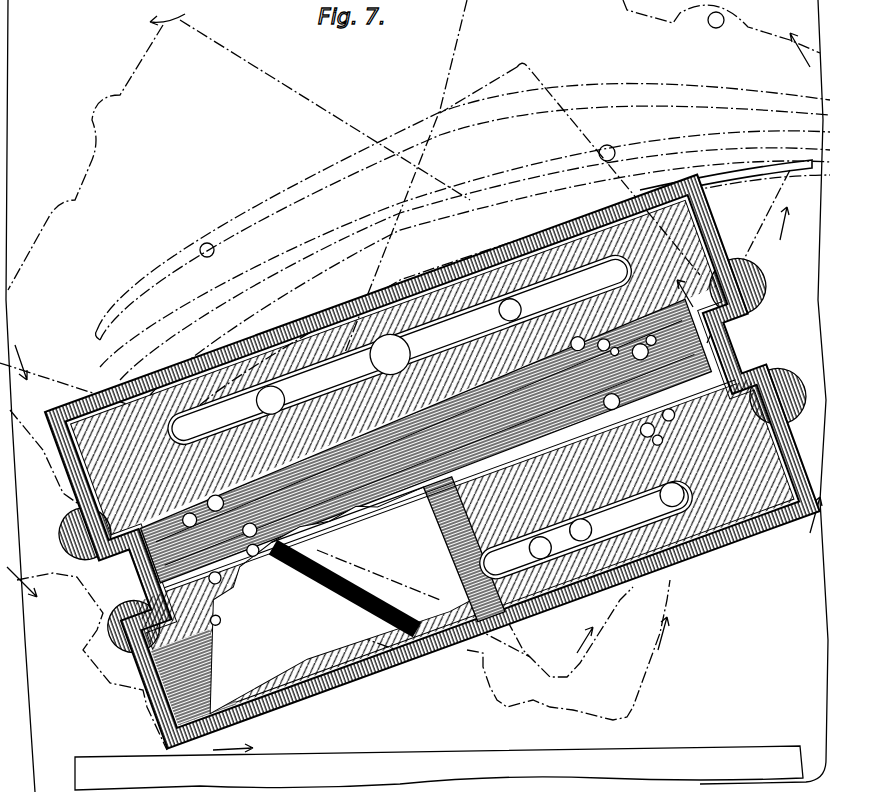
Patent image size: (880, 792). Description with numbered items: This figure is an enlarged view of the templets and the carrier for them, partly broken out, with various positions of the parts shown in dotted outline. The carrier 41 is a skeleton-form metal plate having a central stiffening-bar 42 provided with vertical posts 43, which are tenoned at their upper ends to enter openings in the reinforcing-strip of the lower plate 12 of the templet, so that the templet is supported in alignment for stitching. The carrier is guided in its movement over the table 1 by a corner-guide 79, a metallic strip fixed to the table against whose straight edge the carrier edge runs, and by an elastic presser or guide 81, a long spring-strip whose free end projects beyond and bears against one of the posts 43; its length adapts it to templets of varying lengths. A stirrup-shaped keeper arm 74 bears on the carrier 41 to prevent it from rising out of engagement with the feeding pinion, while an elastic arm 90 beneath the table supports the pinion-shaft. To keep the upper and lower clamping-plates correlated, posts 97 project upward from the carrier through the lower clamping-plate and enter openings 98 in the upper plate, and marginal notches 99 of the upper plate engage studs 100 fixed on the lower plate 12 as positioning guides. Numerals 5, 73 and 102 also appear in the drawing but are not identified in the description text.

The table 1 is at (417, 396).
The door 5 is at (91, 153).
The lower plate 12 is at (415, 600).
The carrier 41 is at (745, 565).
The central stiffening-bar 42 is at (335, 570).
The vertical posts 43 is at (617, 400).
The plate 73 is at (398, 367).
The stirrup-shaped arm 74 is at (378, 572).
The corner-guide 79 is at (445, 757).
The elastic presser or guide 81 is at (683, 133).
The elastic arm 90 is at (257, 567).
The posts 97 is at (220, 500).
The openings 98 is at (652, 438).
The marginal notches 99 is at (190, 516).
The studs 100 is at (622, 347).
The pin 102 is at (634, 347).